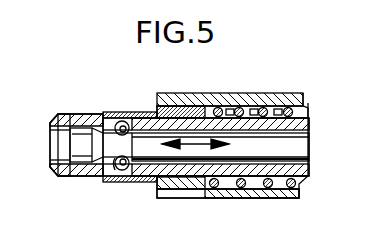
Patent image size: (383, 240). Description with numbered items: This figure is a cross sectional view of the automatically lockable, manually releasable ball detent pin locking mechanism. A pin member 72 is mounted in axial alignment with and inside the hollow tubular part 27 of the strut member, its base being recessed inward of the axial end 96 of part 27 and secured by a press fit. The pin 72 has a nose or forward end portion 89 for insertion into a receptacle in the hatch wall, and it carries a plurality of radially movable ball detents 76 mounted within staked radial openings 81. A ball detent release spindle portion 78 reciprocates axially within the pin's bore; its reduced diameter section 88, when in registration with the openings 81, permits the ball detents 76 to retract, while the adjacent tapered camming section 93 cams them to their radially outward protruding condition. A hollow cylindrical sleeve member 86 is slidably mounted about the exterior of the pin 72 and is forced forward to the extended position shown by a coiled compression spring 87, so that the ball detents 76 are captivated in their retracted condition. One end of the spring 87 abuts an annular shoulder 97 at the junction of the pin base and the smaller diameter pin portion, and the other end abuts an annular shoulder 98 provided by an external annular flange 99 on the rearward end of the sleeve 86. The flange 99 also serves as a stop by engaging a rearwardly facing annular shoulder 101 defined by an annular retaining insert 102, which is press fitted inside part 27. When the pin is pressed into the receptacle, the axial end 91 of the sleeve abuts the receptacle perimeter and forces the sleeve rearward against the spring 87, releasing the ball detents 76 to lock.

The hollow tubular part 27 is at (288, 195).
The pin member 72 is at (72, 175).
The ball detents 76 is at (125, 170).
The ball detent release spindle portion 78 is at (302, 151).
The staked radial openings 81 is at (113, 172).
The sleeve member 86 is at (119, 171).
The coiled compression spring 87 is at (243, 188).
The reduced diameter section 88 is at (104, 126).
The nose or forward end portion 89 is at (56, 117).
The axial end of the sleeve 91 is at (104, 113).
The tapered camming section 93 is at (128, 122).
The axial end of part 27 96 is at (174, 198).
The annular shoulder 97 is at (288, 107).
The annular shoulder 98 is at (217, 107).
The external annular flange 99 is at (209, 108).
The rearwardly facing annular shoulder 101 is at (210, 188).
The annular retaining insert 102 is at (158, 192).